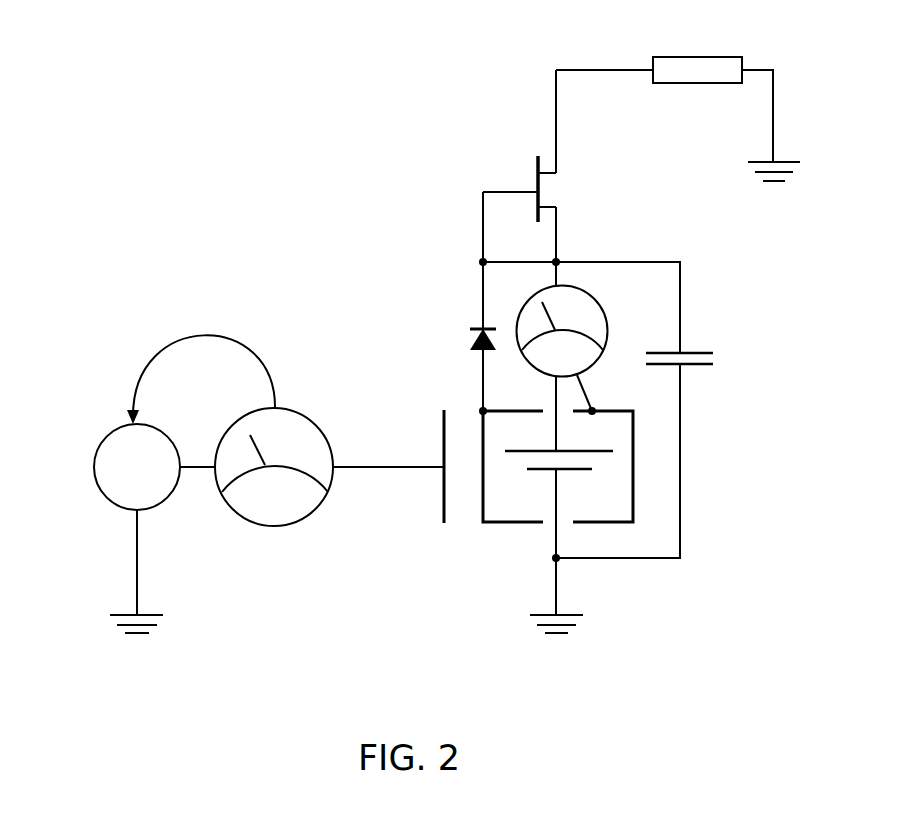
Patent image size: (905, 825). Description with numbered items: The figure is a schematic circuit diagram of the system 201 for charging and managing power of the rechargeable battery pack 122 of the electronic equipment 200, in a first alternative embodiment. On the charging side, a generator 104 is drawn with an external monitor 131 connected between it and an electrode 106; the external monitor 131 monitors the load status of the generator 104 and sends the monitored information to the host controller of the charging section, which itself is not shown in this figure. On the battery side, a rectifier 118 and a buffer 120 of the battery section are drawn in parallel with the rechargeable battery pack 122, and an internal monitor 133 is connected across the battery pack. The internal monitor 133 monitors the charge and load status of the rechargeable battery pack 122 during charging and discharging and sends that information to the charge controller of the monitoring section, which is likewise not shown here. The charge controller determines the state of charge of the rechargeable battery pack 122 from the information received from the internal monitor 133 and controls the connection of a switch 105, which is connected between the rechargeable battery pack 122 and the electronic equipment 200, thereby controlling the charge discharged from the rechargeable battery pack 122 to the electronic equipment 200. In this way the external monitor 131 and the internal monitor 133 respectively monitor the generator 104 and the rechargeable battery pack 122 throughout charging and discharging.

The system 201 is at (228, 70).
The electronic equipment 200 is at (690, 67).
The switch 105 is at (536, 180).
The rectifier 118 is at (466, 346).
The internal monitor 133 is at (543, 359).
The buffer 120 is at (696, 350).
The electrode 106 is at (441, 443).
The rechargeable battery pack 122 is at (515, 523).
The external monitor 131 is at (295, 506).
The generator 104 is at (93, 468).